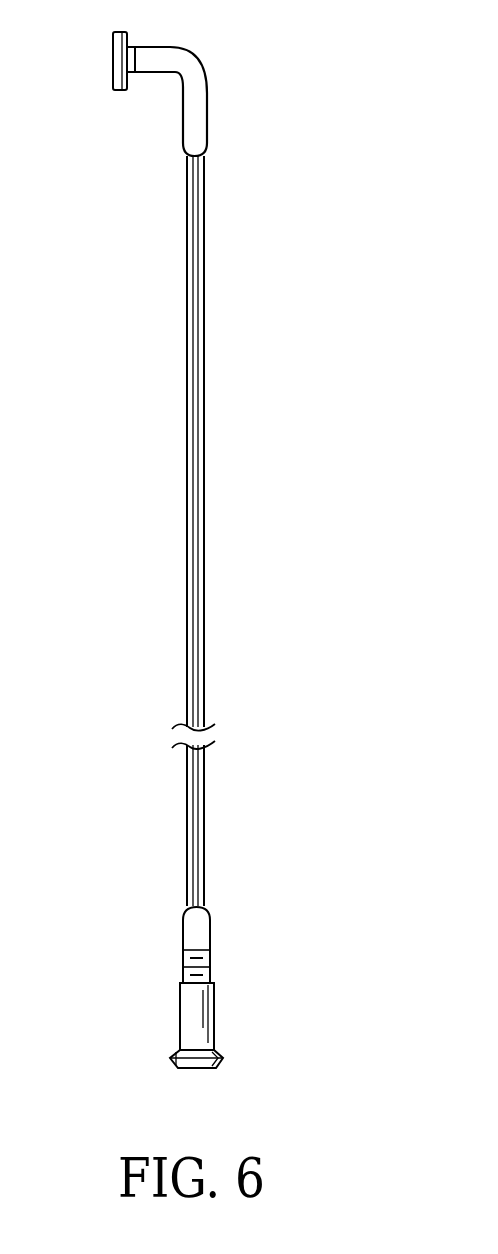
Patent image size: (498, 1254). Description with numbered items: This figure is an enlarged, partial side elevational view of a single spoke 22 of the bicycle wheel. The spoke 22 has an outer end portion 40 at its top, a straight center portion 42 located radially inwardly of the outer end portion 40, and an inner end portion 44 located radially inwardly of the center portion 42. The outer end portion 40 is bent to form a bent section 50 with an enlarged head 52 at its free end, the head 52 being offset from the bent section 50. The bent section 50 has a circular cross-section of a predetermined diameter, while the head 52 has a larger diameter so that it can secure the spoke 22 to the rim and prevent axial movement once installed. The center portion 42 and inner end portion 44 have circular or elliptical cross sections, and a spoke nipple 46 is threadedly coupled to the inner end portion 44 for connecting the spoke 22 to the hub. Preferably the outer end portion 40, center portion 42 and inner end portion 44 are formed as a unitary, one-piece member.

The spoke 22 is at (257, 580).
The outer end portion 40 is at (208, 125).
The center portion 42 is at (205, 430).
The inner end portion 44 is at (210, 952).
The spoke nipple 46 is at (214, 1033).
The bent section 50 is at (200, 60).
The head 52 is at (113, 65).